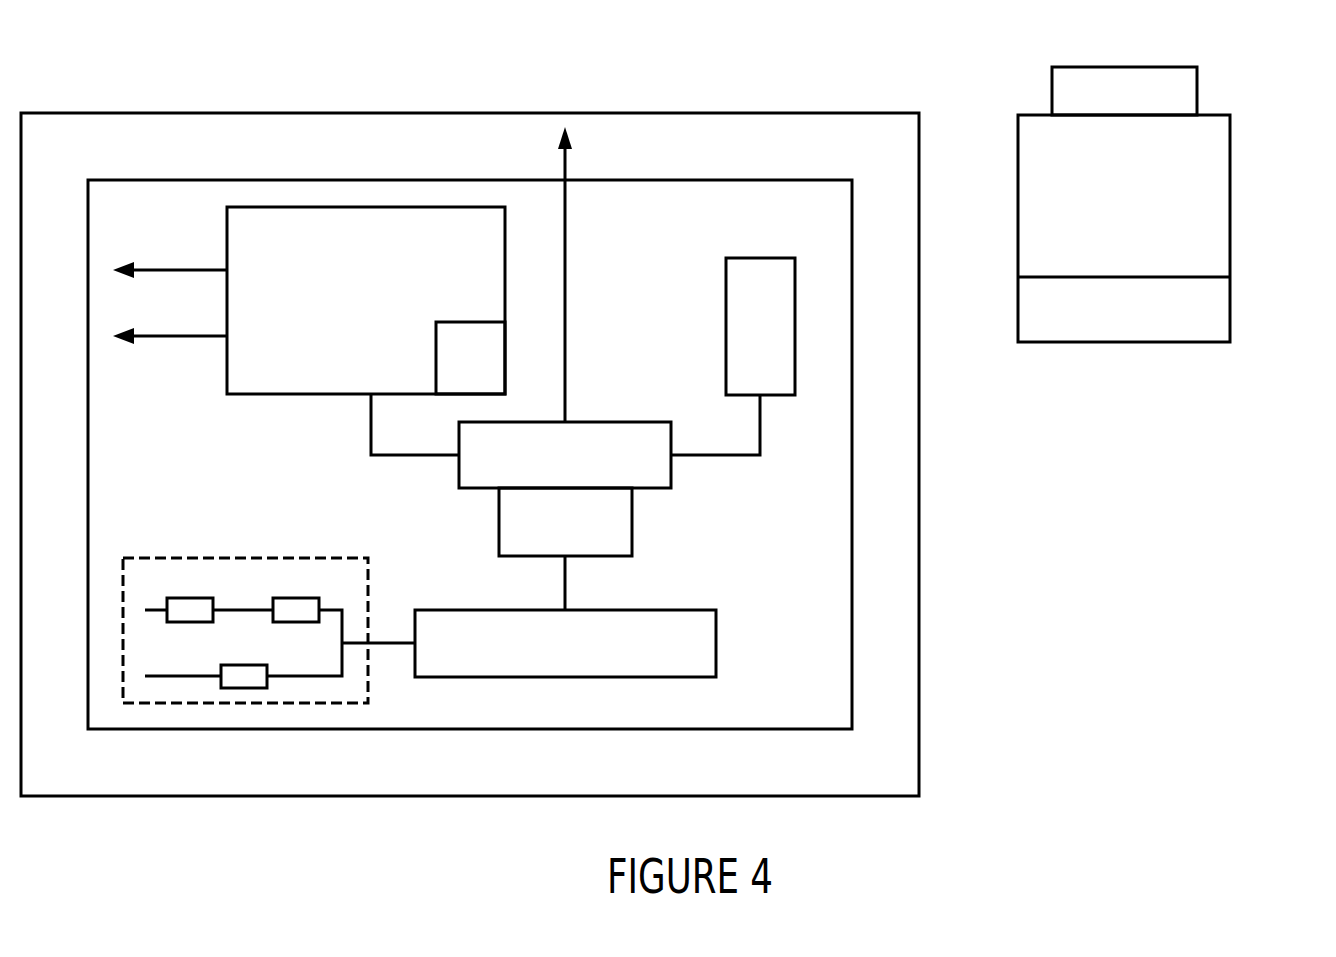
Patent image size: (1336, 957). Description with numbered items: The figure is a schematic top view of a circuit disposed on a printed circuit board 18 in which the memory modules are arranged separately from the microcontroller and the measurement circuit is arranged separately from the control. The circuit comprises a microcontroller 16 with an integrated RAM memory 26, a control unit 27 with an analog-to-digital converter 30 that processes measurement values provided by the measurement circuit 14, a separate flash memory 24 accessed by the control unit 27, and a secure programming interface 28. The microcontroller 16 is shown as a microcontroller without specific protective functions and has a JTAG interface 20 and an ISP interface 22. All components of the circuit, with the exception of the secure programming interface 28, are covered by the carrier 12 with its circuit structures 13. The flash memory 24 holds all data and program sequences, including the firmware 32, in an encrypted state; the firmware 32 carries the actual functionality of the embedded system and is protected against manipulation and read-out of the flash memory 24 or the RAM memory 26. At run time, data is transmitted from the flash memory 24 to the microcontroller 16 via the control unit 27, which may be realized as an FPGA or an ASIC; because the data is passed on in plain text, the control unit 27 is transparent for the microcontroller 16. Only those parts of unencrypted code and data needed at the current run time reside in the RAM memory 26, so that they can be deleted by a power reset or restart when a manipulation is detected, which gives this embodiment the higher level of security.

The carrier 12 is at (742, 180).
The circuit structures 13 is at (243, 558).
The measurement circuit 14 is at (716, 640).
The microcontroller 16 is at (328, 394).
The printed circuit board 18 is at (467, 113).
The JTAG interface 20 is at (158, 268).
The ISP interface 22 is at (160, 340).
The flash memory 24 is at (726, 328).
The RAM memory 26 is at (468, 322).
The control unit 27 is at (598, 422).
The secure programming interface 28 is at (567, 162).
The analog-to-digital converter 30 is at (632, 527).
The firmware 32 is at (1230, 312).